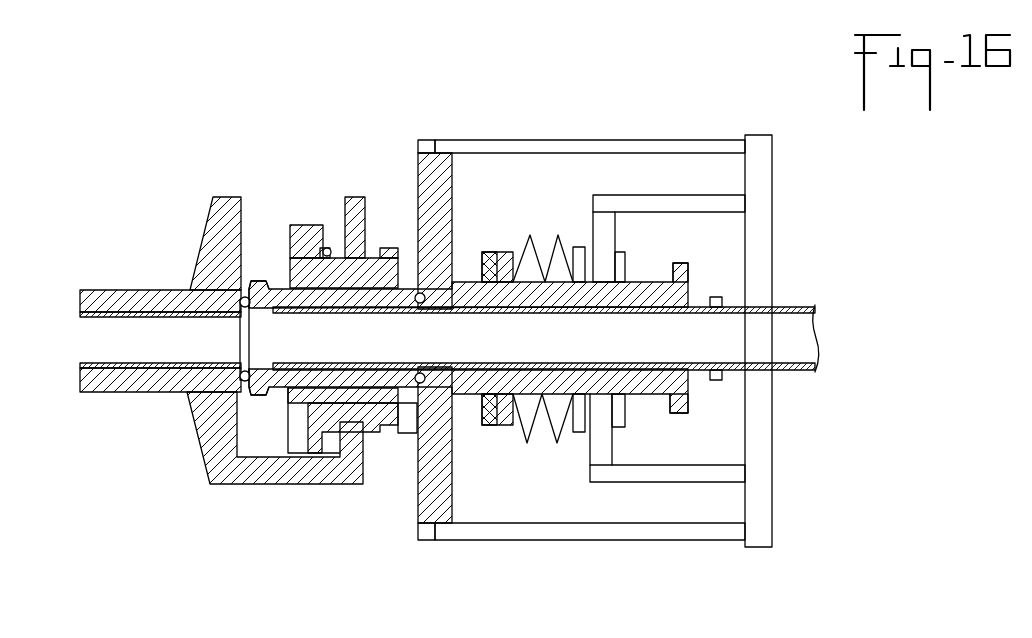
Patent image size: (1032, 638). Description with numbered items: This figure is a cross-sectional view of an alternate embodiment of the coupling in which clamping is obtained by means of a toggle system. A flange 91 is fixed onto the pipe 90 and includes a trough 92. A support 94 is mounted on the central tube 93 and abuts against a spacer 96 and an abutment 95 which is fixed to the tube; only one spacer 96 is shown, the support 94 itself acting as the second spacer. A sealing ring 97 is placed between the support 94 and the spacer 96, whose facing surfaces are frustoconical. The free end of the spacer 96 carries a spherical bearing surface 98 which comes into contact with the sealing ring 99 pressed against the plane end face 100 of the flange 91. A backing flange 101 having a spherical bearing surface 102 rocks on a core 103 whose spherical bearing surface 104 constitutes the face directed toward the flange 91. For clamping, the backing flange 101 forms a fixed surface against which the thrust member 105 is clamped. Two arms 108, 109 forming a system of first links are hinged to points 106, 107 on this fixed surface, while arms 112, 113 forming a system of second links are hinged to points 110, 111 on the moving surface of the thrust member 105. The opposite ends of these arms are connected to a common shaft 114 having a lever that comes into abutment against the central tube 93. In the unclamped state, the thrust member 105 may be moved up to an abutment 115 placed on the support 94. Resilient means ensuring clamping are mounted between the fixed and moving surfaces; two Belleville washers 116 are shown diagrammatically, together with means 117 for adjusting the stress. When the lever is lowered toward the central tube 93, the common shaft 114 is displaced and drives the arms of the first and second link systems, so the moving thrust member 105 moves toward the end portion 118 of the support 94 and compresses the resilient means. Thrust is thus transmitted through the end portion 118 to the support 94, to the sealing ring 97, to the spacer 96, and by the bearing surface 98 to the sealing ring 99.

The pipe 90 is at (133, 325).
The flange 91 is at (213, 226).
The trough 92 is at (270, 476).
The central tube 93 is at (803, 322).
The support 94 is at (683, 397).
The abutment 95 is at (714, 297).
The spacer 96 is at (383, 338).
The sealing ring 97 is at (403, 414).
The spherical bearing surface 98 is at (245, 380).
The sealing ring 99 is at (243, 368).
The end face 100 is at (241, 275).
The backing flange 101 is at (309, 445).
The spherical bearing surface 102 is at (338, 246).
The core 103 is at (387, 256).
The spherical bearing surface 104 is at (311, 250).
The thrust member 105 is at (598, 233).
The hinge point 106 is at (425, 538).
The hinge point 107 is at (432, 149).
The arm 108 is at (684, 526).
The arm 109 is at (664, 146).
The hinge point 110 is at (602, 480).
The hinge point 111 is at (604, 205).
The arm 112 is at (680, 471).
The arm 113 is at (690, 204).
The common shaft 114 is at (768, 274).
The abutment 115 is at (683, 262).
The Belleville washers 116 is at (557, 443).
The stress adjusting means 117 is at (492, 427).
The end portion 118 is at (493, 258).